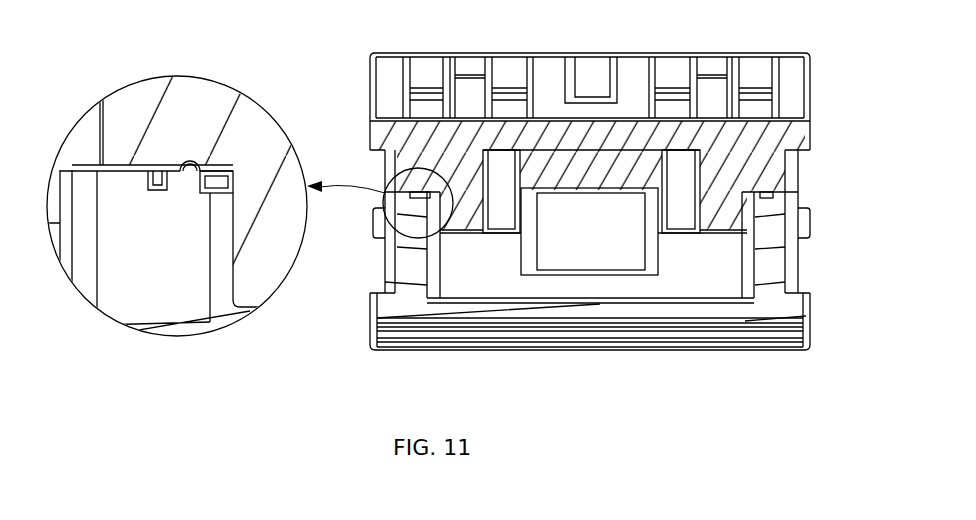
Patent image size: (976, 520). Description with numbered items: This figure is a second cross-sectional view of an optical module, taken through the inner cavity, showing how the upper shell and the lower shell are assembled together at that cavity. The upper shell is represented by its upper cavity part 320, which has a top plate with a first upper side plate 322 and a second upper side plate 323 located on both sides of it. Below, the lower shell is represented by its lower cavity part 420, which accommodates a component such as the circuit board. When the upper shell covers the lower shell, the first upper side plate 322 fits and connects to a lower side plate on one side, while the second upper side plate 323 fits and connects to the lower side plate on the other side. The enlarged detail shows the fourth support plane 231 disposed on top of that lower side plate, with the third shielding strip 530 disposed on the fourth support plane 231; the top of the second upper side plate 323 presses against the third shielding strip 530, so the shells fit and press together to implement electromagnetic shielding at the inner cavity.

The upper cavity part 320 is at (572, 142).
The fourth support plane 231 is at (157, 190).
The third shielding strip 530 is at (187, 178).
The second upper side plate 323 is at (413, 268).
The lower cavity part 420 is at (560, 307).
The first upper side plate 322 is at (770, 273).